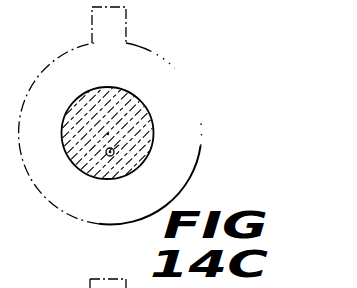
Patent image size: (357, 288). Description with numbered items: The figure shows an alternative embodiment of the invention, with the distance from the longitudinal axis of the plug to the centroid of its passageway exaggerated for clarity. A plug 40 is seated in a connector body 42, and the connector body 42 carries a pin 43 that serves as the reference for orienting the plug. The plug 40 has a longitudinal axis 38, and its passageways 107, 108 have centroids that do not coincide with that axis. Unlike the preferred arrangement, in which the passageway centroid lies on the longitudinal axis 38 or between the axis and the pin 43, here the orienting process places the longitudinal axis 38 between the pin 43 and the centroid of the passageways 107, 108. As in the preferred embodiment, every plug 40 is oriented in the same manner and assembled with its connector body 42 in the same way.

The longitudinal axis 38 is at (108, 134).
The plug 40 is at (140, 103).
The connector body 42 is at (197, 108).
The pin 43 is at (92, 12).
The passageway 107 is at (107, 154).
The passageway 108 is at (119, 145).